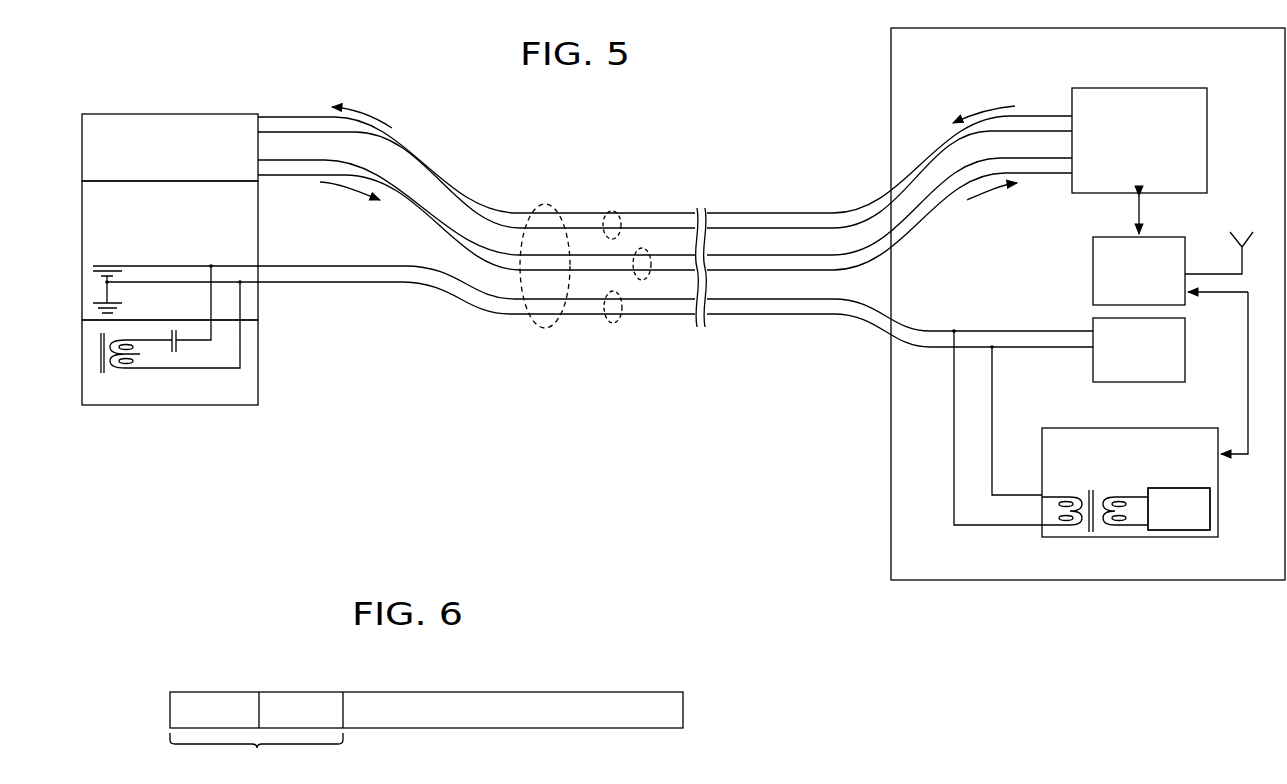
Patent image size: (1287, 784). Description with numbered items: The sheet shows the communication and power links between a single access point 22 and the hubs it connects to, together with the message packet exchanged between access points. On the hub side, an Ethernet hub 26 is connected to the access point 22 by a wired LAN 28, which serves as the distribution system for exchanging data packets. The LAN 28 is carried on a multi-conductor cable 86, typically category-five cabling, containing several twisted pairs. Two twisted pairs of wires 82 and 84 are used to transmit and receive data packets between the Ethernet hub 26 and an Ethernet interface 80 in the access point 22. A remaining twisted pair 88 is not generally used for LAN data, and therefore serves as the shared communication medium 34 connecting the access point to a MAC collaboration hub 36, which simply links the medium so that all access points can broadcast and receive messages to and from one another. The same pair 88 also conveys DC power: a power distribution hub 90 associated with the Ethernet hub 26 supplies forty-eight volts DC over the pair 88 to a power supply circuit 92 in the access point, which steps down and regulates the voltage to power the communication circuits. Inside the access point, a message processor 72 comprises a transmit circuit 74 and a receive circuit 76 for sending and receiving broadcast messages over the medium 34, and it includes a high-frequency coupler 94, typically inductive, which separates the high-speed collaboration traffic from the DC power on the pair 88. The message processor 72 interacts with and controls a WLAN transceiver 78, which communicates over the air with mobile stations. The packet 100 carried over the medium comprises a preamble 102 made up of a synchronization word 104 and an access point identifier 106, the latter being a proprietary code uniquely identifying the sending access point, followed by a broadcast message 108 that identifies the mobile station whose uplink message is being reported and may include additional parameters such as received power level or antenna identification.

In FIG. 5, the access point 22 is at (891, 113).
In FIG. 5, the Ethernet hub 26 is at (82, 152).
In FIG. 5, the wired LAN 28 is at (472, 169).
In FIG. 5, the shared communication medium 34 is at (439, 302).
In FIG. 5, the MAC collaboration hub 36 is at (82, 344).
In FIG. 5, the message processor 72 is at (1065, 428).
In FIG. 5, the transmit circuit 74 is at (1162, 537).
In FIG. 5, the receive circuit 76 is at (1179, 509).
In FIG. 5, the WLAN transceiver 78 is at (1093, 274).
In FIG. 5, the Ethernet interface 80 is at (1142, 88).
In FIG. 5, the twisted pair of wires 82 is at (617, 210).
In FIG. 5, the twisted pair of wires 84 is at (648, 278).
In FIG. 5, the multi-conductor cable 86 is at (540, 325).
In FIG. 5, the remaining twisted pair 88 is at (618, 322).
In FIG. 5, the power distribution hub 90 is at (82, 265).
In FIG. 5, the power supply circuit 92 is at (1093, 379).
In FIG. 5, the high-frequency coupler 94 is at (1100, 533).
In FIG. 6, the packet 100 is at (592, 662).
In FIG. 6, the preamble 102 is at (256, 752).
In FIG. 6, the synchronization word 104 is at (215, 692).
In FIG. 6, the access point identifier 106 is at (316, 692).
In FIG. 6, the broadcast message 108 is at (475, 692).